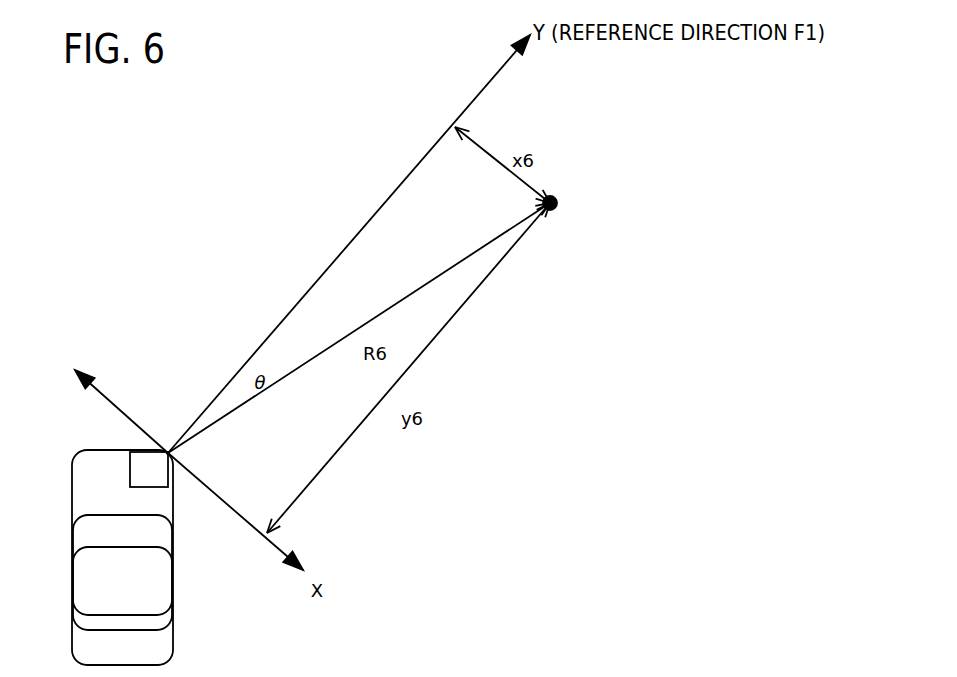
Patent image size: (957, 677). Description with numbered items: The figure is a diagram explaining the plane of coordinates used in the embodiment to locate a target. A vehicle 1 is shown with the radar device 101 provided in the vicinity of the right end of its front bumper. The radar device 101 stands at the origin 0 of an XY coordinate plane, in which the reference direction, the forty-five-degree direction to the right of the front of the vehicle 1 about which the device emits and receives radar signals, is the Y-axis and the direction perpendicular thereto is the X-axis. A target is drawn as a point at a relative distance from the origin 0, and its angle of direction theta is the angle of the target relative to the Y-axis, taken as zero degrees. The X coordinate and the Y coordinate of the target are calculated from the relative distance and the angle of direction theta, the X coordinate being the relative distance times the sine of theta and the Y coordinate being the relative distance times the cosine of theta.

The vehicle 1 is at (175, 645).
The radar device 101 is at (145, 460).
The origin 0 is at (165, 438).